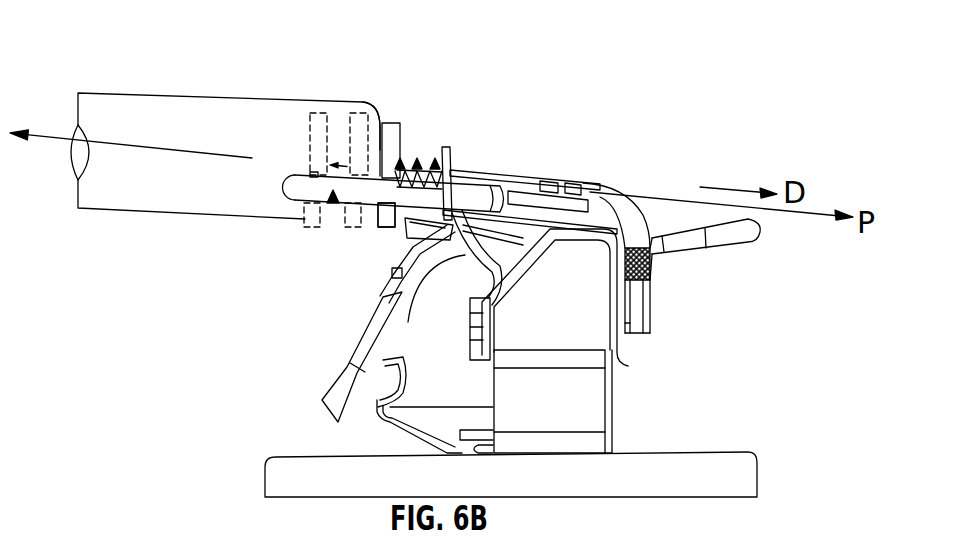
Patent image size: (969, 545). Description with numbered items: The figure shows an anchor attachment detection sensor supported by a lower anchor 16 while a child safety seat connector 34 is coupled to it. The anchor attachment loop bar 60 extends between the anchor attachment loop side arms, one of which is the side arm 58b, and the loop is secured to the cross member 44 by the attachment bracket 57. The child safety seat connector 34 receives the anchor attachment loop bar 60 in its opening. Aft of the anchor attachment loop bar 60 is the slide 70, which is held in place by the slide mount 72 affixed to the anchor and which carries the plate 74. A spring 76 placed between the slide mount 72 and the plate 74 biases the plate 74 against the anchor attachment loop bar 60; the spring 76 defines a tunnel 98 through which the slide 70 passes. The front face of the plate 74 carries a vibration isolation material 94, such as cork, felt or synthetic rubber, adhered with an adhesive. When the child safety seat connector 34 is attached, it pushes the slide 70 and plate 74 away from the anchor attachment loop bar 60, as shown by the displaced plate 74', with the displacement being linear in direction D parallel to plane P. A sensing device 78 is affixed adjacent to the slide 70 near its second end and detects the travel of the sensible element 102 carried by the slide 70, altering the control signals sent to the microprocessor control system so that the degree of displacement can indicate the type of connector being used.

The child safety seat connector 34 is at (147, 113).
The plate 74 is at (297, 123).
The plate 74' is at (336, 127).
The vibration isolation material 94 is at (370, 118).
The spring 76 is at (418, 167).
The tunnel 98 is at (435, 163).
The slide mount 72 is at (450, 160).
The slide 70 is at (543, 181).
The sensible element 102 is at (567, 182).
The sensing device 78 is at (600, 181).
The anchor attachment loop bar 60 is at (297, 192).
The lower anchor 16 is at (336, 206).
The anchor attachment loop side arm 58b is at (374, 205).
The attachment bracket 57 is at (503, 280).
The cross member 44 is at (620, 352).